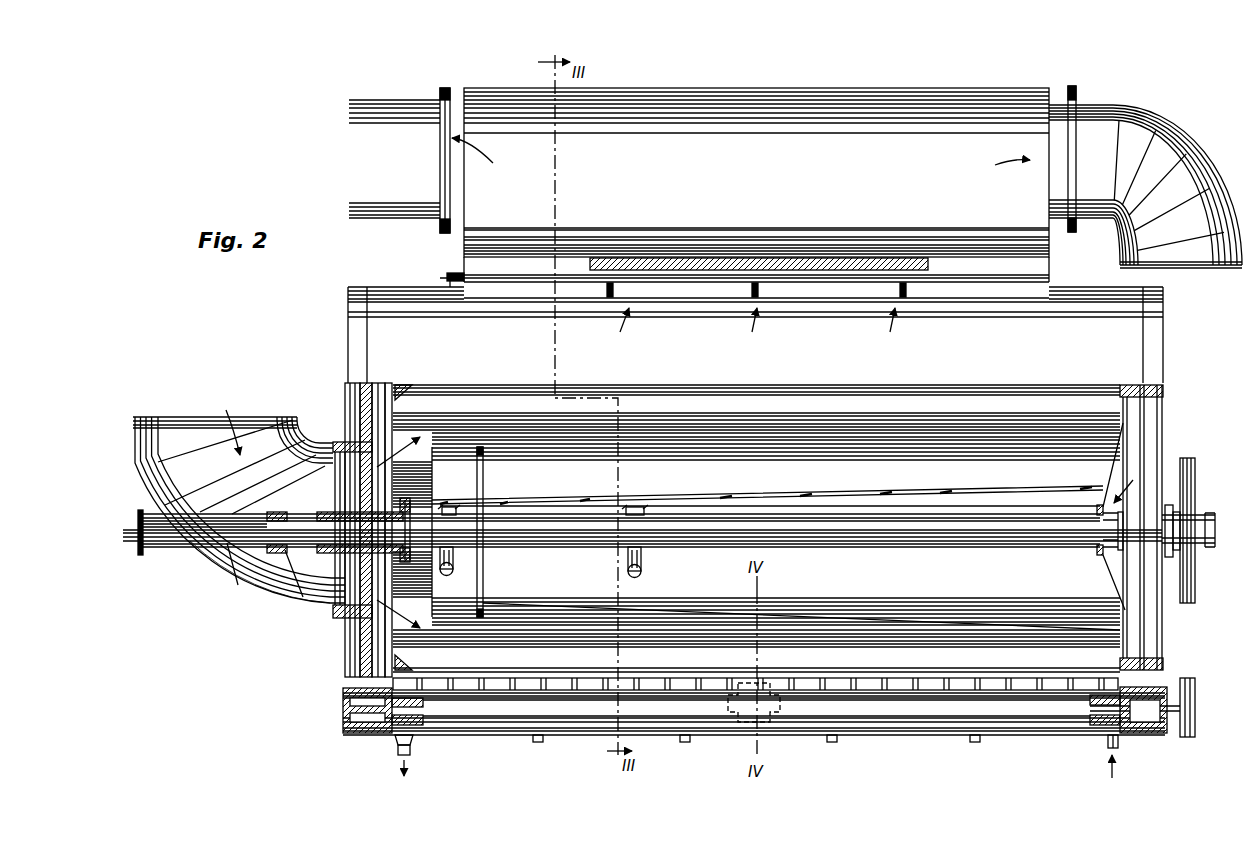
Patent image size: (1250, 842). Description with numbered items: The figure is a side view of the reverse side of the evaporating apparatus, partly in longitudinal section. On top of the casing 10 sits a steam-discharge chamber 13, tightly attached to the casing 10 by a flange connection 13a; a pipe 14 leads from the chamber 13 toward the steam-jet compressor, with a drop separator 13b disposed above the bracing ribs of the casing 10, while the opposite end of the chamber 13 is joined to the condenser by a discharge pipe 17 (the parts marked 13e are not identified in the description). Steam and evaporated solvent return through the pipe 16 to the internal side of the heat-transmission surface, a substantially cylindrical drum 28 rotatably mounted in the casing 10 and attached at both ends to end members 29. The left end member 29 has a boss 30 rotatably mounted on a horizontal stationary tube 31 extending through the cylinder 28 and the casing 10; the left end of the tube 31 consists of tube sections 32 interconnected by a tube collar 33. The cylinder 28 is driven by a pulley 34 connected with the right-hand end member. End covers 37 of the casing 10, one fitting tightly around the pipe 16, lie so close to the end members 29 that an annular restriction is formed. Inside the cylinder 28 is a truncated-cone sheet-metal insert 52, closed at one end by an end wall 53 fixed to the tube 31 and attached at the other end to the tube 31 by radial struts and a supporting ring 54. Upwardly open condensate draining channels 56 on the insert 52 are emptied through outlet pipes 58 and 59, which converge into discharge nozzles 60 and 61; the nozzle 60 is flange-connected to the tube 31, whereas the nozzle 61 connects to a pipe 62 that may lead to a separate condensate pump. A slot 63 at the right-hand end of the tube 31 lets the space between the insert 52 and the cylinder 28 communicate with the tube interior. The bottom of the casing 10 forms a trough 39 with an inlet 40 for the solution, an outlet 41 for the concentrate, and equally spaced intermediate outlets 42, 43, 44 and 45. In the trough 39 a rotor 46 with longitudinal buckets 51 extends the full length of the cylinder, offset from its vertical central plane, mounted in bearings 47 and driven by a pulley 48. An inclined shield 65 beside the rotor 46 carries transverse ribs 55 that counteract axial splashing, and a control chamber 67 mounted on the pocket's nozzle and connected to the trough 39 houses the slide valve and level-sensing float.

The casing 10 is at (392, 290).
The steam-discharge chamber 13 is at (708, 100).
The flange connection 13a is at (449, 275).
The drop separator 13b is at (870, 273).
The baffle 13e is at (616, 290).
The pipe 14 is at (1180, 142).
The pipe 16 is at (148, 420).
The discharge pipe 17 is at (387, 104).
The drum 28 is at (1112, 405).
The end members 29 is at (350, 397).
The boss 30 is at (342, 614).
The stationary tube 31 is at (1034, 527).
The tube sections 32 is at (234, 558).
The tube collar 33 is at (295, 513).
The pulley 34 is at (1195, 578).
The end covers 37 is at (348, 414).
The trough 39 is at (905, 736).
The inlet 40 is at (1108, 746).
The outlet 41 is at (412, 750).
The intermediate outlet 42 is at (537, 744).
The intermediate outlet 43 is at (686, 744).
The intermediate outlet 44 is at (830, 744).
The intermediate outlet 45 is at (975, 744).
The rotor 46 is at (1033, 713).
The bearings 47 is at (345, 731).
The pulley 48 is at (1196, 727).
The longitudinal buckets 51 is at (878, 736).
The insert 52 is at (512, 628).
The end wall 53 is at (1118, 595).
The supporting ring 54 is at (480, 620).
The transverse ribs 55 is at (1026, 686).
The condensate draining channels 56 is at (988, 490).
The outlet pipe 58 is at (453, 506).
The outlet pipe 59 is at (642, 506).
The discharge nozzle 60 is at (447, 575).
The discharge nozzle 61 is at (635, 577).
The pipe 62 is at (141, 553).
The slot 63 is at (1097, 546).
The shield 65 is at (1068, 688).
The control chamber 67 is at (778, 729).